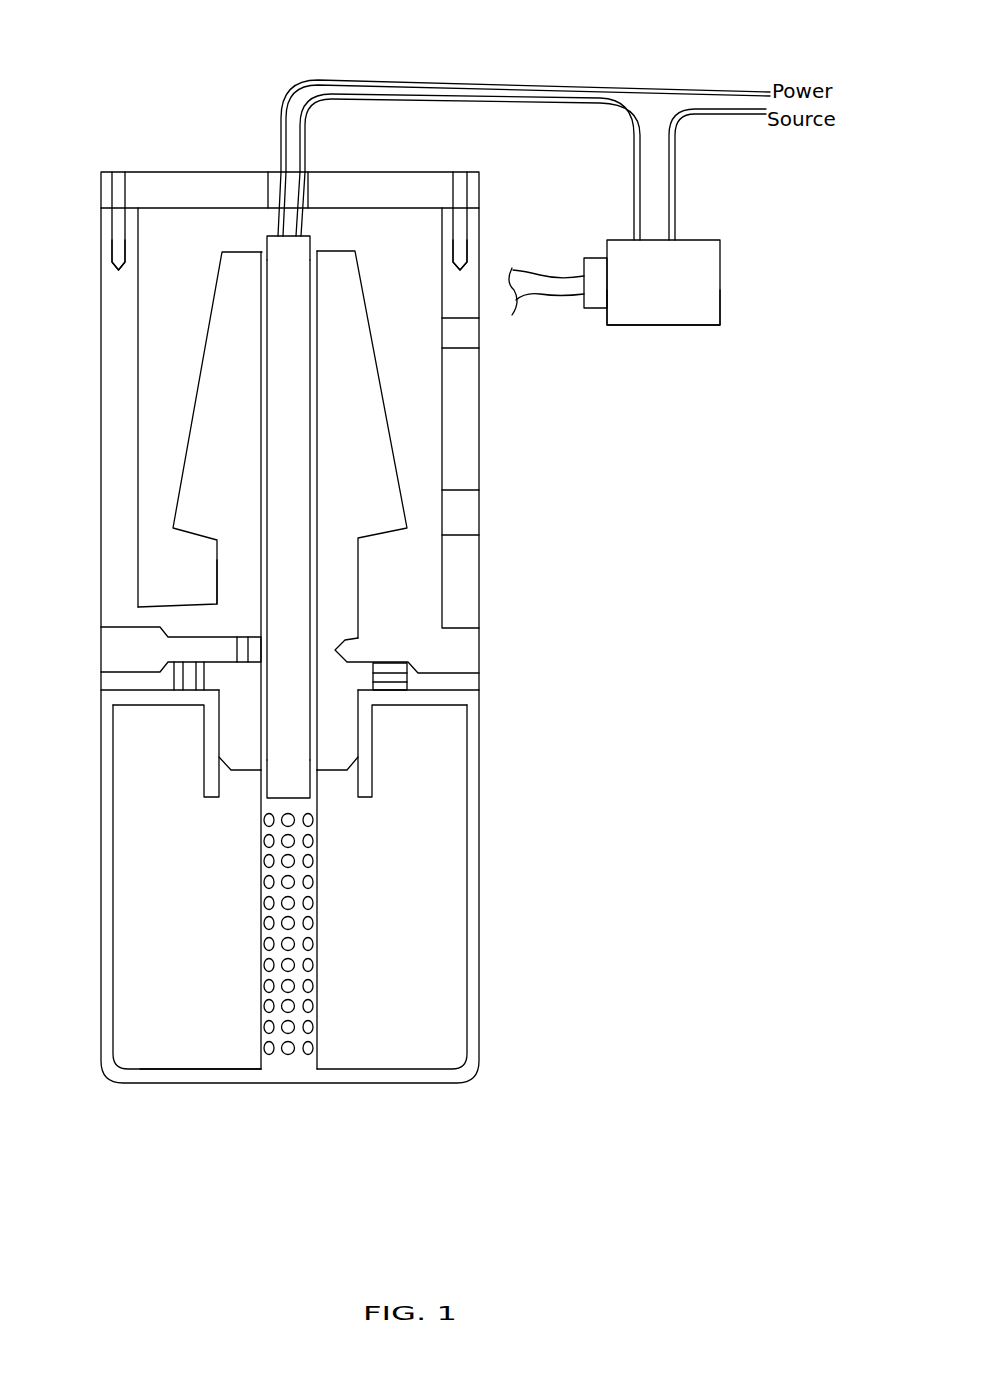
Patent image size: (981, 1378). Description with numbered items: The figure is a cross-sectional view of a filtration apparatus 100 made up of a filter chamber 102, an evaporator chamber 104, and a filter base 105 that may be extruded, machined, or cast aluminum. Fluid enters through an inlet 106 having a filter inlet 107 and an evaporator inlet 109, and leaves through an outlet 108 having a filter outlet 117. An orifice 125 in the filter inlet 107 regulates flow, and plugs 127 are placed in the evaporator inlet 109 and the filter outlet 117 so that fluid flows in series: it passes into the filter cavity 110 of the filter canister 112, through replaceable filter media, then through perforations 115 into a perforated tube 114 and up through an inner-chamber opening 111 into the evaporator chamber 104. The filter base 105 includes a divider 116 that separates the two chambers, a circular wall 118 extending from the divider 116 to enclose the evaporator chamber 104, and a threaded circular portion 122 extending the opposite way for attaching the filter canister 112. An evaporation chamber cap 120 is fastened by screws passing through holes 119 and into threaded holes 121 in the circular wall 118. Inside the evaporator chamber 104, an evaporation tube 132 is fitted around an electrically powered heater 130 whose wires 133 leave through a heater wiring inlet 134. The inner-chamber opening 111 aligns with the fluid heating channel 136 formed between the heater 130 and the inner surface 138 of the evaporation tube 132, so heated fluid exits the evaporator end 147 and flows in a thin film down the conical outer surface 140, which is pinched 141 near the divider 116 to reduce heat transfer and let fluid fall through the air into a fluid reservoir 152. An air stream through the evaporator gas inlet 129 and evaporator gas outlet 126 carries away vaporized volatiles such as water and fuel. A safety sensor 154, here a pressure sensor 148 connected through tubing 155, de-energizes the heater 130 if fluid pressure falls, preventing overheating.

The filtration apparatus 100 is at (254, 543).
The filter chamber 102 is at (258, 887).
The evaporator chamber 104 is at (200, 511).
The filter base 105 is at (112, 522).
The inlet 106 is at (137, 641).
The filter inlet 107 is at (120, 708).
The outlet 108 is at (491, 428).
The evaporator inlet 109 is at (228, 645).
The filter cavity 110 is at (203, 949).
The inner-chamber opening 111 is at (298, 805).
The filter canister 112 is at (104, 885).
The perforated tube 114 is at (321, 919).
The perforations 115 is at (289, 964).
The divider 116 is at (482, 689).
The filter outlet 117 is at (373, 686).
The circular wall 118 is at (101, 318).
The holes 119 is at (290, 201).
The evaporation chamber cap 120 is at (290, 170).
The threaded holes 121 is at (118, 235).
The threaded circular portion 122 is at (290, 741).
The orifice 125 is at (189, 691).
The evaporator gas outlet 126 is at (470, 341).
The plugs 127 is at (246, 651).
The evaporator gas inlet 129 is at (468, 517).
The heater 130 is at (284, 534).
The evaporation tube 132 is at (210, 305).
The wires 133 is at (304, 123).
The heater wiring inlet 134 is at (275, 172).
The fluid heating channel 136 is at (262, 462).
The inner surface 138 is at (318, 376).
The outer surface 140 is at (398, 510).
The pinched portion 141 is at (338, 576).
The evaporator end 147 is at (263, 249).
The pressure sensor 148 is at (652, 282).
The fluid reservoir 152 is at (193, 591).
The safety sensor 154 is at (683, 311).
The tubing 155 is at (547, 297).